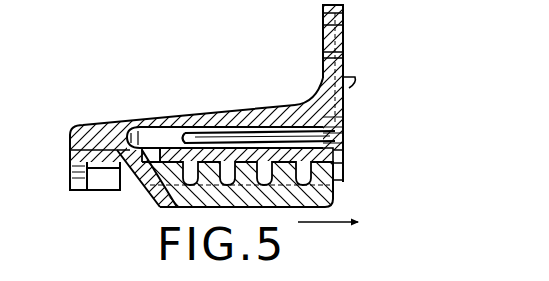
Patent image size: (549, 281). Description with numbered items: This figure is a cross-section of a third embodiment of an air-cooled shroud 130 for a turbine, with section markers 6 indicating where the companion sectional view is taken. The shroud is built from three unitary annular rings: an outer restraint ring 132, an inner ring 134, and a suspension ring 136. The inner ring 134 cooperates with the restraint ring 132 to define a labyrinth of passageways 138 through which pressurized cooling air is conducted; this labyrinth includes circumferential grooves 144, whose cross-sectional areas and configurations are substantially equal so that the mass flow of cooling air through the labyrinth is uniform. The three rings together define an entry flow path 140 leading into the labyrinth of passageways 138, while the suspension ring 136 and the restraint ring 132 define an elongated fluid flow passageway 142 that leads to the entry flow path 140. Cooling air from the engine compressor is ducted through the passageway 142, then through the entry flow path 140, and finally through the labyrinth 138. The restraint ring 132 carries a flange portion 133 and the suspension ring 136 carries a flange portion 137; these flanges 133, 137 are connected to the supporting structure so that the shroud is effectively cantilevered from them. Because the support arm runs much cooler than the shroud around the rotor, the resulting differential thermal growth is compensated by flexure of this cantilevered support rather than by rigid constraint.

The air-cooled shroud 130 is at (227, 91).
The restraint ring 132 is at (338, 164).
The flange portion 133 is at (364, 58).
The inner ring 134 is at (158, 209).
The suspension ring 136 is at (101, 122).
The flange portion 137 is at (323, 73).
The labyrinth of passageways 138 is at (266, 192).
The entry flow path 140 is at (147, 128).
The elongated fluid flow passageway 142 is at (212, 127).
The circumferential grooves 144 is at (194, 170).
The section line 6- 6 is at (64, 150).